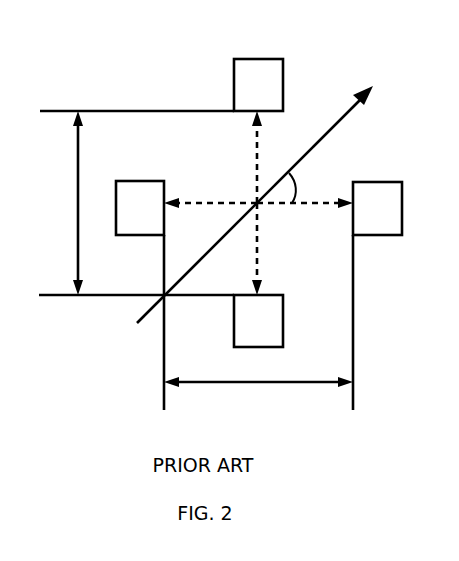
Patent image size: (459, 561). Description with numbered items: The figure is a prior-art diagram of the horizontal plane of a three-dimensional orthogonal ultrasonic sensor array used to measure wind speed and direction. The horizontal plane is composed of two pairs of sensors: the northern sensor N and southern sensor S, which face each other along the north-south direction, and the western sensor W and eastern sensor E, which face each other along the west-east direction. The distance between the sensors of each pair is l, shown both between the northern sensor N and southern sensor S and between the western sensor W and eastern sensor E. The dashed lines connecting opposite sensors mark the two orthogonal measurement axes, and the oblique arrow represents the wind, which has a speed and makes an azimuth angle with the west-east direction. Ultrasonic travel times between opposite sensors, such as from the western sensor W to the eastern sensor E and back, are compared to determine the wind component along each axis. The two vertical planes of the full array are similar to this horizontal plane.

The northern sensor N is at (258, 85).
The western sensor W is at (140, 208).
The southern sensor S is at (258, 321).
The eastern sensor E is at (377, 208).
The distance of each pair of sensors l is at (193, 267).